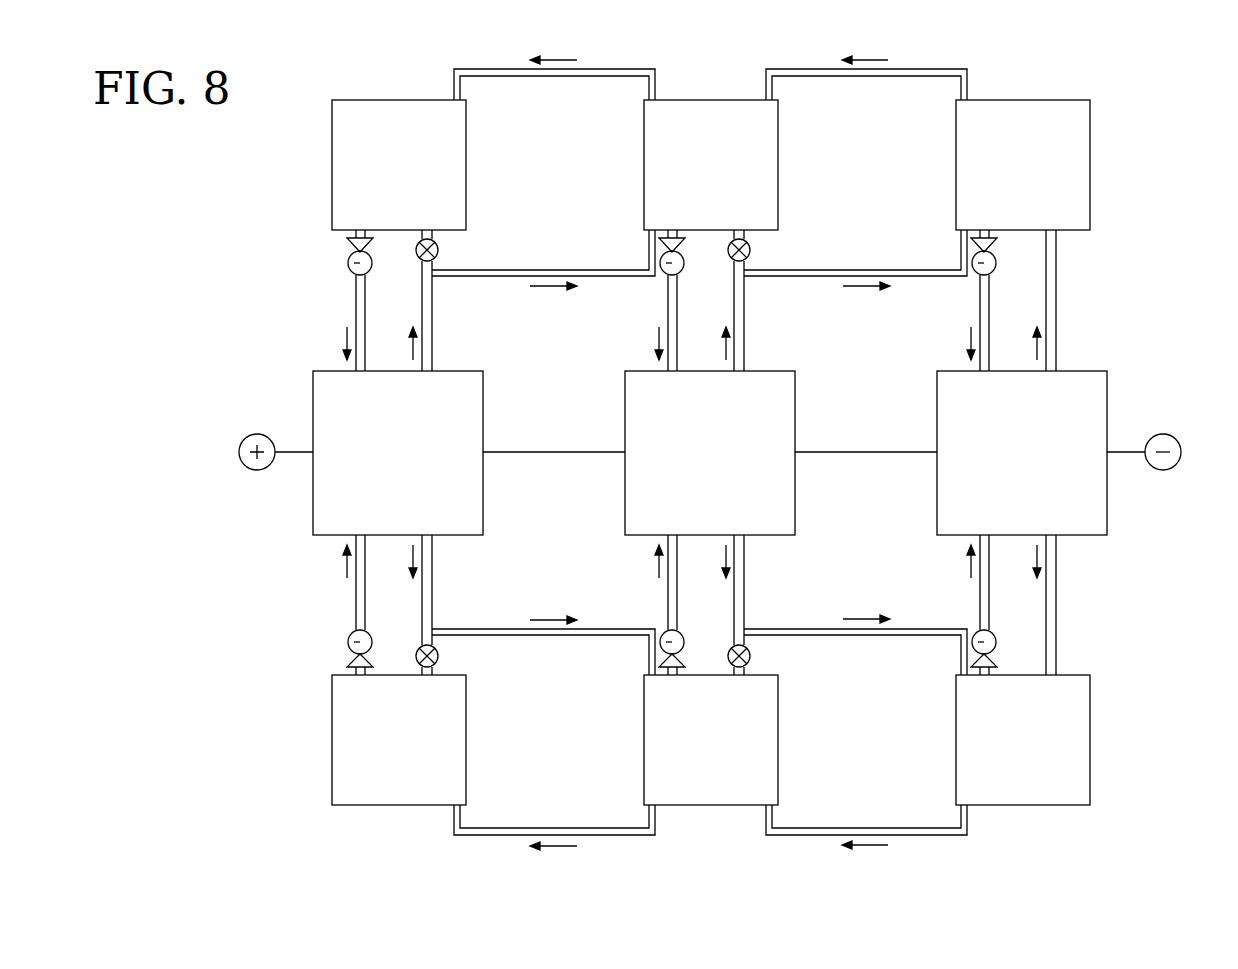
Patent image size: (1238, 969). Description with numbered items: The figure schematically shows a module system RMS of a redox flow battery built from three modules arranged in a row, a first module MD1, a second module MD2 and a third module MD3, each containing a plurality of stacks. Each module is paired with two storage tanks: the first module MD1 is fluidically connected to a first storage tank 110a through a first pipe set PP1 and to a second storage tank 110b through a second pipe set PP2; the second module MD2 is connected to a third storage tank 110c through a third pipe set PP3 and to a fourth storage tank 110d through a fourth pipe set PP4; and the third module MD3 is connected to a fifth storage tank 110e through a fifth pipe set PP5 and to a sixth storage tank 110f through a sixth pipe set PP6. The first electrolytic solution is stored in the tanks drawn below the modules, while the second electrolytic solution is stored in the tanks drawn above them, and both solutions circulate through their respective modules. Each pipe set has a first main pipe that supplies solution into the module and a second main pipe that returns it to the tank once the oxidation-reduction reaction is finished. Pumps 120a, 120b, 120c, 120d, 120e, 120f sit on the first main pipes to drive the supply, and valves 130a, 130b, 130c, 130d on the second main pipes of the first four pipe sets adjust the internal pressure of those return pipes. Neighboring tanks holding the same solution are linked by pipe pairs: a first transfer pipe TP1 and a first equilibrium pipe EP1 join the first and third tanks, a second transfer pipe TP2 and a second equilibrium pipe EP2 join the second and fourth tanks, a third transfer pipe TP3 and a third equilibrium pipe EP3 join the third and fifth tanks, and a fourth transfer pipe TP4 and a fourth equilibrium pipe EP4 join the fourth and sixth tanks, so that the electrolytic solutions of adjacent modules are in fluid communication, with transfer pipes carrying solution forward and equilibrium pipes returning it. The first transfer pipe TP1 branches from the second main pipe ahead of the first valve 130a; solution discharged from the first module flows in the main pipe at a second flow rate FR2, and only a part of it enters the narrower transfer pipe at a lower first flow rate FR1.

The first storage tank 110a is at (398, 790).
The second storage tank 110b is at (394, 115).
The third storage tank 110c is at (710, 790).
The fourth storage tank 110d is at (706, 115).
The fifth storage tank 110e is at (1022, 790).
The sixth storage tank 110f is at (1018, 115).
The first pump 120a is at (348, 642).
The second pump 120b is at (348, 263).
The third pump 120c is at (665, 630).
The fourth pump 120d is at (665, 276).
The pump 120e is at (996, 642).
The pump 120f is at (996, 262).
The first valve 130a is at (438, 656).
The second valve 130b is at (438, 250).
The valve 130c is at (750, 656).
The valve 130d is at (750, 250).
The first module MD1 is at (378, 464).
The second module MD2 is at (690, 464).
The third module MD3 is at (1002, 464).
The first pipe set PP1 is at (319, 605).
The second pipe set PP2 is at (319, 300).
The third pipe set PP3 is at (762, 605).
The fourth pipe set PP4 is at (762, 300).
The fifth pipe set PP5 is at (1086, 605).
The sixth pipe set PP6 is at (1086, 300).
The first equilibrium pipe EP1 is at (553, 826).
The second equilibrium pipe EP2 is at (553, 77).
The third equilibrium pipe EP3 is at (866, 828).
The fourth equilibrium pipe EP4 is at (866, 77).
The first transfer pipe TP1 is at (553, 637).
The second transfer pipe TP2 is at (553, 268).
The third transfer pipe TP3 is at (866, 637).
The fourth transfer pipe TP4 is at (866, 268).
The first flow rate FR1 is at (570, 613).
The second flow rate FR2 is at (395, 561).
The module system RMS is at (1190, 49).